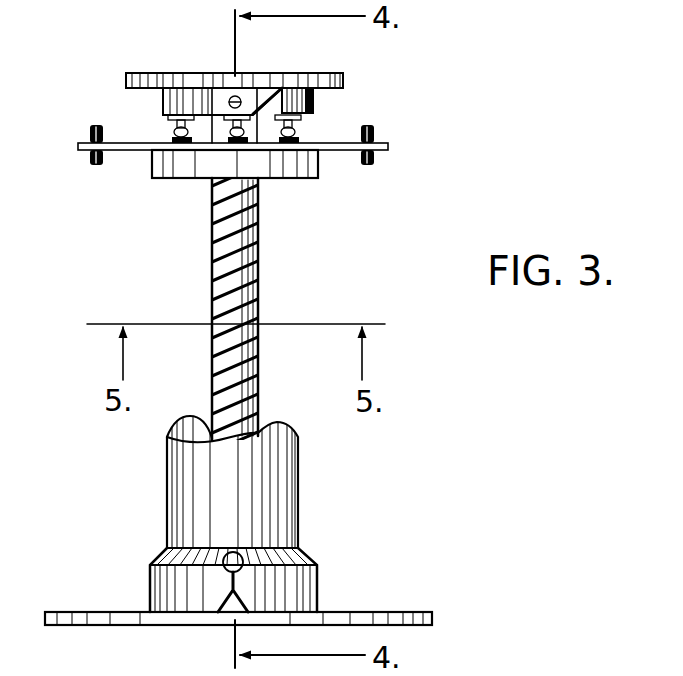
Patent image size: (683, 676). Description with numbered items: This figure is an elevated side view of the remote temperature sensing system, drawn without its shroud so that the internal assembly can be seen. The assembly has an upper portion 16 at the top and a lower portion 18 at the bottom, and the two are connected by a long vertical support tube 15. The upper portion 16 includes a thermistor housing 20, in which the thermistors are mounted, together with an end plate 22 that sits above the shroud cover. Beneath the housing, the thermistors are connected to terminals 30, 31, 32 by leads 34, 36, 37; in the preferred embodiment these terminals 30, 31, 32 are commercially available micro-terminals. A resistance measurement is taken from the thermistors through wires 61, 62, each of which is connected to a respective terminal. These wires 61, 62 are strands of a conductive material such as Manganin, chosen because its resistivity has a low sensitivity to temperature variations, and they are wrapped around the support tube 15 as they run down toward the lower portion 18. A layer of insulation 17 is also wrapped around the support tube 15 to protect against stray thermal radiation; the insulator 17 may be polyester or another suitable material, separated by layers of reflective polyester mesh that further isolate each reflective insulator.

The support tube 15 is at (222, 376).
The upper portion 16 is at (129, 108).
The layer of insulation 17 is at (226, 497).
The lower portion 18 is at (179, 587).
The thermistor housing 20 is at (349, 104).
The end plate 22 is at (344, 79).
The terminal 30 is at (176, 143).
The terminal 31 is at (228, 127).
The terminal 32 is at (298, 133).
The lead 34 is at (162, 117).
The lead 36 is at (262, 88).
The lead 37 is at (318, 74).
The wire 61 is at (262, 233).
The wire 62 is at (240, 270).